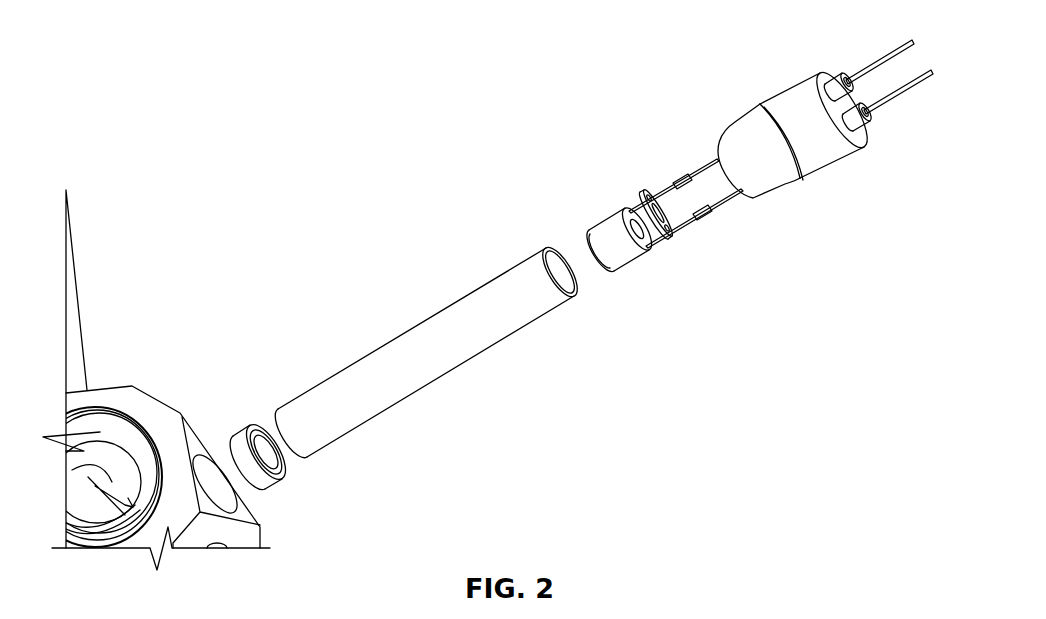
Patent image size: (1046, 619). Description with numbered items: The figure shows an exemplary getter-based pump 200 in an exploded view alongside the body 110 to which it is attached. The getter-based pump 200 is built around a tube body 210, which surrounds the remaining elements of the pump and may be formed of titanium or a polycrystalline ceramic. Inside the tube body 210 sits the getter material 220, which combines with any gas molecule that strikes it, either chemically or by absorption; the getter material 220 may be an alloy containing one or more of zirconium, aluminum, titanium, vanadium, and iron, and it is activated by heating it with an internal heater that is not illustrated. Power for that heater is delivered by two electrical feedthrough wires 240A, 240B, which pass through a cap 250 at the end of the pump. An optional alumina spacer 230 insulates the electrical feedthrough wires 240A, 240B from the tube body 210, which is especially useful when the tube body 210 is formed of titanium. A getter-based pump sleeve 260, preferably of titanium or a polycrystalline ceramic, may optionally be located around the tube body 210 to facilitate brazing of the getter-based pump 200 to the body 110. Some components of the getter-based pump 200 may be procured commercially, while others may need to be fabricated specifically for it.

The getter-based pump 200 is at (138, 42).
The body 110 is at (113, 348).
The tube body 210 is at (440, 387).
The getter material 220 is at (600, 213).
The alumina spacer 230 is at (668, 235).
The electrical feedthrough wire 240A is at (890, 107).
The electrical feedthrough wire 240B is at (877, 63).
The cap 250 is at (738, 117).
The getter-based pump sleeve 260 is at (228, 428).